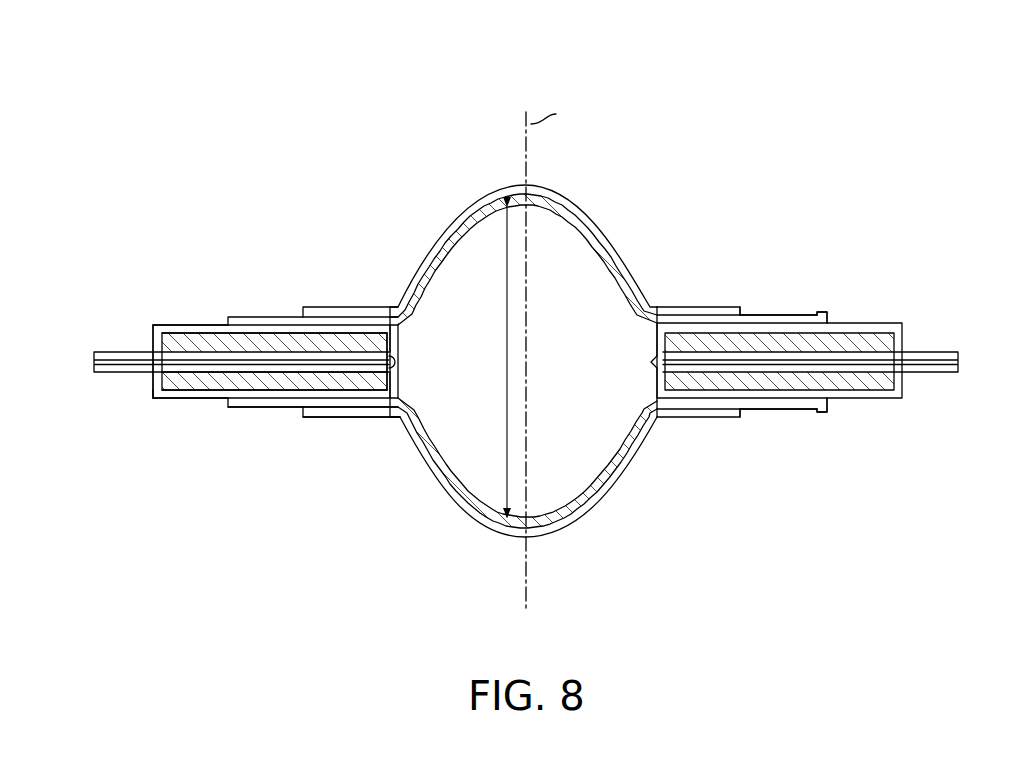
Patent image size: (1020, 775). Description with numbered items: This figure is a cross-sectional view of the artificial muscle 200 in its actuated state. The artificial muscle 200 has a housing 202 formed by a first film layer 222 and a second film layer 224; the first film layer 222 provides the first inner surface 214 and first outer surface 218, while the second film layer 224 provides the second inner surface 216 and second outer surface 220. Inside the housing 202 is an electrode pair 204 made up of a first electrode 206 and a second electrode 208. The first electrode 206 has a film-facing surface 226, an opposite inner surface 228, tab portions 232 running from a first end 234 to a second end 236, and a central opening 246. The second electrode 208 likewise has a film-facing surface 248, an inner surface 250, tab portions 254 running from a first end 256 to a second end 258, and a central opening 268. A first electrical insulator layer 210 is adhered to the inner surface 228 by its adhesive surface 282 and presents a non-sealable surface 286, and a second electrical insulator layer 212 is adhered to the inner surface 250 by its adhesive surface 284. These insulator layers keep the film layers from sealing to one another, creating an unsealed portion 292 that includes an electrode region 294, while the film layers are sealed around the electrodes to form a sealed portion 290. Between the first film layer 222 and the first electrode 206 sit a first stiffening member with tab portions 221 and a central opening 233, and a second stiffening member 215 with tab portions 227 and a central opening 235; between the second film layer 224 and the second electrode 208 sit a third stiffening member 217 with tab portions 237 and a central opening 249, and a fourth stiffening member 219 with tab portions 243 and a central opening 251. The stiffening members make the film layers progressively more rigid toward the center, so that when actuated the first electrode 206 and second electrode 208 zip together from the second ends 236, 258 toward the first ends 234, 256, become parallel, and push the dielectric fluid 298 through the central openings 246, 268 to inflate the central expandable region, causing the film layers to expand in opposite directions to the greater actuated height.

The artificial muscle 200 is at (500, 338).
The housing 202 is at (233, 354).
The electrode pair 204 is at (256, 414).
The first electrode 206 is at (274, 435).
The second electrode 208 is at (289, 324).
The first electrical insulator layer 210 is at (274, 419).
The second electrical insulator layer 212 is at (347, 335).
The first inner surface 214 is at (583, 499).
The second stiffening member 215 is at (826, 446).
The second inner surface 216 is at (580, 224).
The third stiffening member 217 is at (740, 269).
The first outer surface 218 is at (564, 538).
The fourth stiffening member 219 is at (823, 277).
The second outer surface 220 is at (515, 362).
The tab portions 221 is at (698, 405).
The first film layer 222 is at (489, 604).
The second film layer 224 is at (490, 120).
The film-facing surface 226 is at (170, 400).
The tab portions 227 is at (757, 398).
The inner surface 228 is at (160, 338).
The tab portions 232 is at (341, 429).
The central opening 233 is at (580, 431).
The first end 234 is at (461, 400).
The central opening 235 is at (637, 398).
The second end 236 is at (160, 381).
The tab portions 237 is at (690, 320).
The tab portions 243 is at (757, 328).
The central opening 246 is at (440, 489).
The film-facing surface 248 is at (395, 240).
The central opening 249 is at (638, 327).
The inner surface 250 is at (362, 358).
The central opening 251 is at (582, 293).
The tab portions 254 is at (274, 299).
The first end 256 is at (393, 348).
The second end 258 is at (160, 343).
The central opening 268 is at (463, 293).
The adhesive surface 282 is at (484, 523).
The adhesive surface 284 is at (490, 201).
The non-sealable surface 286 is at (452, 483).
The sealed portion 290 is at (85, 360).
The unsealed portion 292 is at (264, 495).
The electrode region 294 is at (351, 487).
The dielectric fluid 298 is at (610, 374).